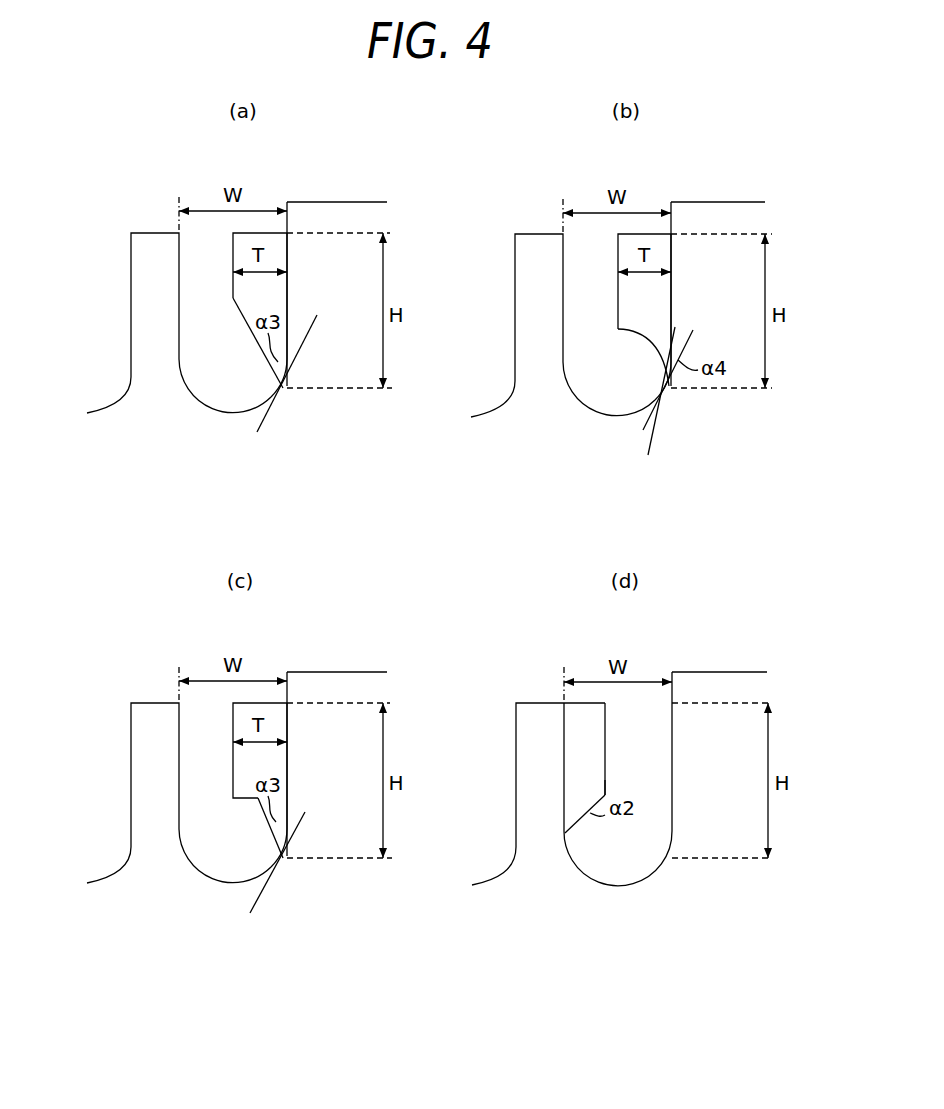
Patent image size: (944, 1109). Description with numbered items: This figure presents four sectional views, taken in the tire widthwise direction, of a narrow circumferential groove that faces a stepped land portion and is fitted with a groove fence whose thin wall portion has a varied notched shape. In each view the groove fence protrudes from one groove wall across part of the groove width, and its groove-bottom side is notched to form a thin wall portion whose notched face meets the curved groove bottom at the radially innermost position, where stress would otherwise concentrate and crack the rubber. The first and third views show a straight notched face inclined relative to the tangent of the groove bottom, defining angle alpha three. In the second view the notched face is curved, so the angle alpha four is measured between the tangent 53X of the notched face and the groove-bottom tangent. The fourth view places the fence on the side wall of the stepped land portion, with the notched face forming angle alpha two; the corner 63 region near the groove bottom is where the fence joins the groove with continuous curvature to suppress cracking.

The tangent of notched face 53X is at (659, 403).
The corner portion 63 is at (572, 853).